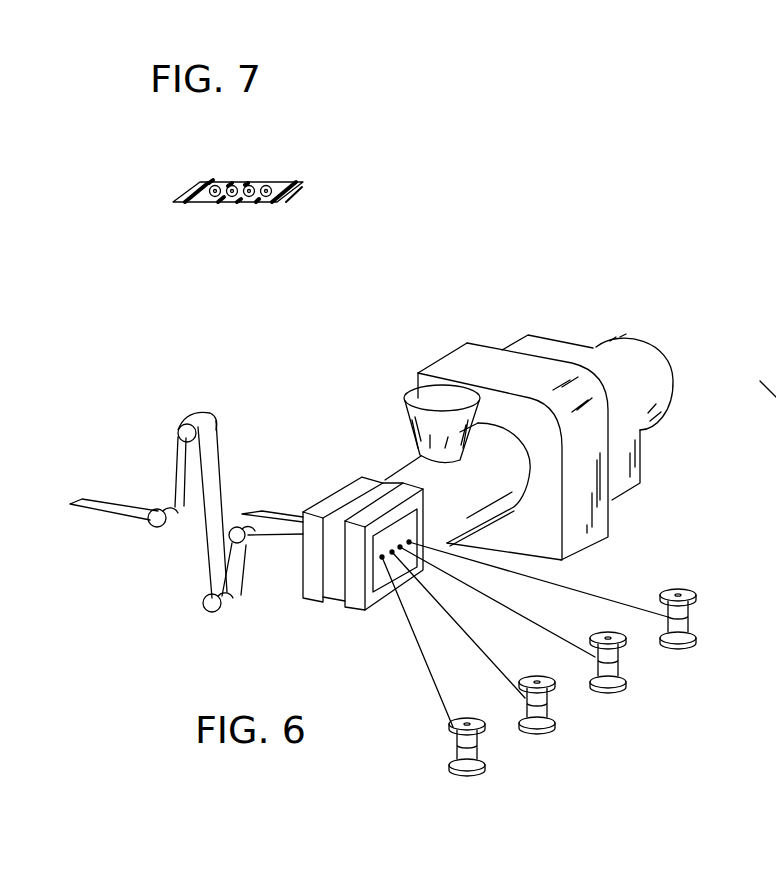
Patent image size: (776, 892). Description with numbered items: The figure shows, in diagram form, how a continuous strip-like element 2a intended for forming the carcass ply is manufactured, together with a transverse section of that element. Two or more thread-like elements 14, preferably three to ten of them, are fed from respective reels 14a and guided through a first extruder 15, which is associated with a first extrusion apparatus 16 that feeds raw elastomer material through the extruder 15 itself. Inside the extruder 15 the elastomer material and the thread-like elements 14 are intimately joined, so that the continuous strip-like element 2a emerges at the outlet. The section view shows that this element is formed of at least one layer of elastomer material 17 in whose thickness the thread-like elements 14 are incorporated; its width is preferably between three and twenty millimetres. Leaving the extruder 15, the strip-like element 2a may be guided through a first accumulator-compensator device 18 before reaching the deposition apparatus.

In FIG. 7, the continuous strip-like element 2a is at (219, 179).
In FIG. 6, the continuous strip-like element 2a is at (217, 454).
In FIG. 7, the thread-like elements 14 is at (273, 191).
In FIG. 6, the thread-like elements 14 is at (432, 678).
In FIG. 6, the reels 14a is at (470, 773).
In FIG. 6, the first extruder 15 is at (338, 498).
In FIG. 6, the first extrusion apparatus 16 is at (482, 341).
In FIG. 7, the layer of elastomer material 17 is at (263, 205).
In FIG. 6, the first accumulator-compensator device 18 is at (253, 463).